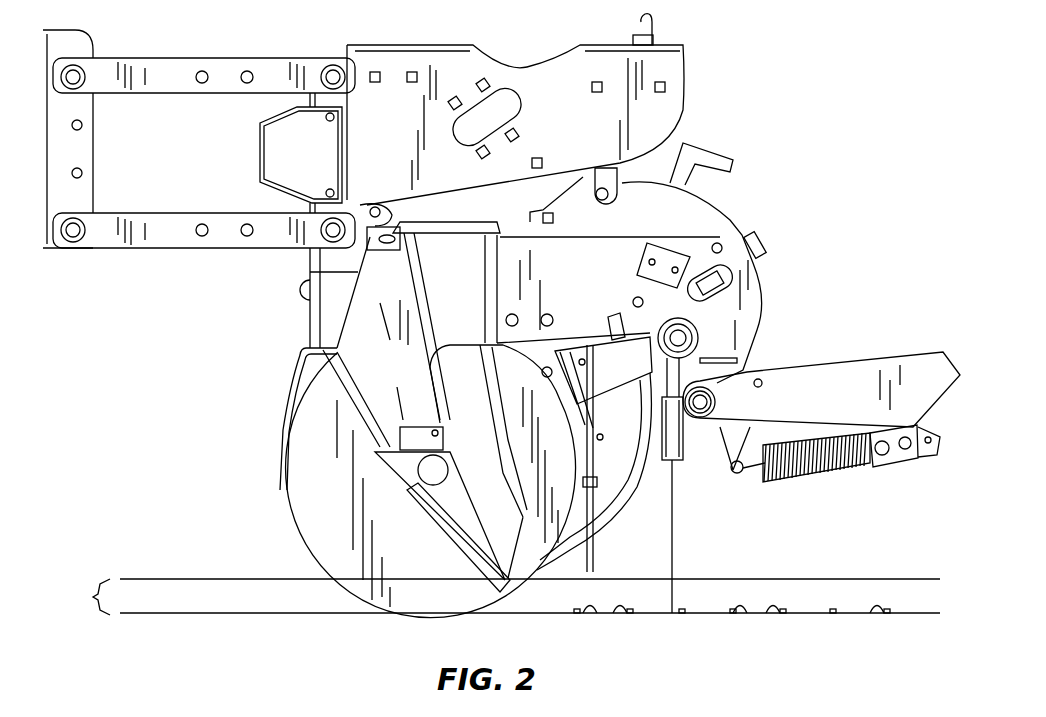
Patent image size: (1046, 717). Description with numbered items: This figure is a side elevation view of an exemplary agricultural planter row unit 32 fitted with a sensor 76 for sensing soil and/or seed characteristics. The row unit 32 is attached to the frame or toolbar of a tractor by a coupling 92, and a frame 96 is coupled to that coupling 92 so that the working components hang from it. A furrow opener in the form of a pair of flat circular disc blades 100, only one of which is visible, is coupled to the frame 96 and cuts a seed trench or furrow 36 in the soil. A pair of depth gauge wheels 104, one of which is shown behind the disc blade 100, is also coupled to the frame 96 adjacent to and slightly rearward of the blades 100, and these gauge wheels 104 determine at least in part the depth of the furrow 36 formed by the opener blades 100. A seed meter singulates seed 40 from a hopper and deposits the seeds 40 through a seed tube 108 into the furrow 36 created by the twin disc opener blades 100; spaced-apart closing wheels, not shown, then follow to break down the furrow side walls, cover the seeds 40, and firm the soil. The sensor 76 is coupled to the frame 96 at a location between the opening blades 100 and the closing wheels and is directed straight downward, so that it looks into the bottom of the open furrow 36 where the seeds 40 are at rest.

The row unit 32 is at (827, 104).
The furrow 36 is at (93, 597).
The seeds 40 is at (600, 613).
The sensor 76 is at (683, 468).
The coupling 92 is at (221, 56).
The frame 96 is at (735, 214).
The disc blade 100 is at (327, 522).
The depth gauge wheel 104 is at (627, 510).
The seed tube 108 is at (500, 492).